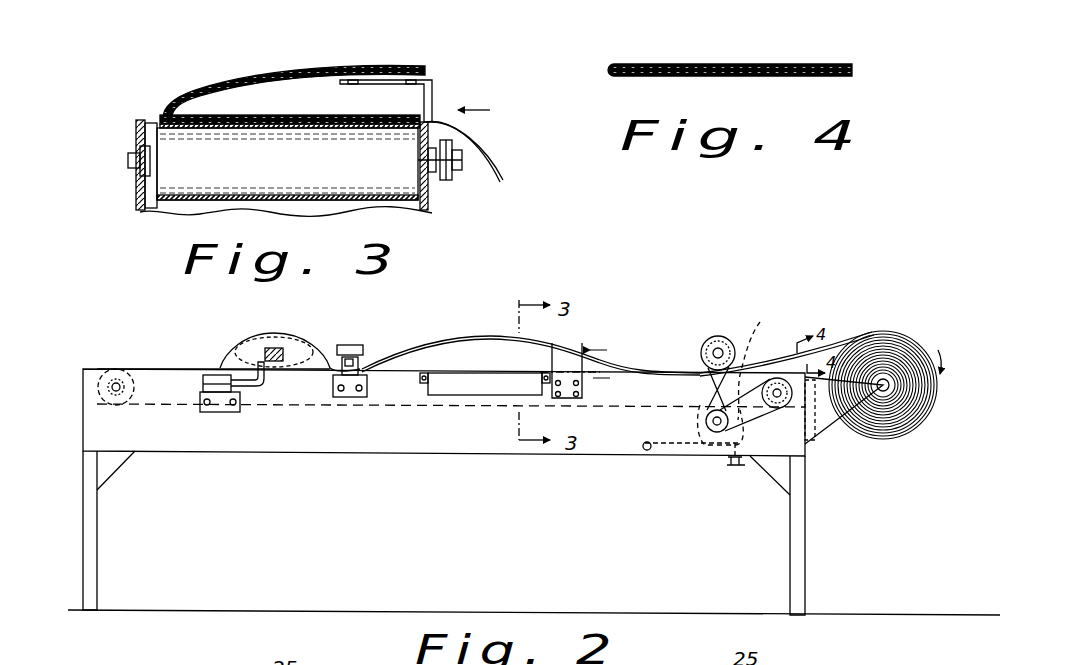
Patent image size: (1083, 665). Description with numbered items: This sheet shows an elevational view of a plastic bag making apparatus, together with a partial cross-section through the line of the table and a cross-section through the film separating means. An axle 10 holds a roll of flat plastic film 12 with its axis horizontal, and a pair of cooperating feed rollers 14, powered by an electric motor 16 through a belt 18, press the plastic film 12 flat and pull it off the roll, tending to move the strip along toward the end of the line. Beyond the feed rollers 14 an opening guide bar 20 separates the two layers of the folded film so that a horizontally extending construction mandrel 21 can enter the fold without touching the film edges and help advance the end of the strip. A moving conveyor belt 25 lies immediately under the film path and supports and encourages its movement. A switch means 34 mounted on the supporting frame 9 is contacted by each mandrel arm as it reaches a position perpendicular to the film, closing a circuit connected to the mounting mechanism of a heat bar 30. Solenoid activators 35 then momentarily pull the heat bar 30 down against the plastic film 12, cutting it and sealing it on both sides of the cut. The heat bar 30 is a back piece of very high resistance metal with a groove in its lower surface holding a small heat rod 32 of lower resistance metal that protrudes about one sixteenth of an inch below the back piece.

In FIG. 3, the supporting frame 9 is at (430, 207).
In FIG. 2, the supporting frame 9 is at (205, 443).
In FIG. 2, the axle 10 is at (876, 387).
In FIG. 3, the plastic film 12 is at (192, 100).
In FIG. 4, the plastic film 12 is at (775, 64).
In FIG. 2, the plastic film 12 is at (468, 342).
In FIG. 2, the feed rollers 14 is at (711, 333).
In FIG. 2, the electric motor 16 is at (704, 423).
In FIG. 2, the belt 18 is at (706, 386).
In FIG. 3, the opening guide bar 20 is at (430, 70).
In FIG. 2, the opening guide bar 20 is at (568, 332).
In FIG. 2, the construction mandrel 21 is at (232, 360).
In FIG. 3, the conveyor belt 25 is at (163, 118).
In FIG. 2, the conveyor belt 25 is at (170, 405).
In FIG. 2, the heat bar 30 is at (347, 345).
In FIG. 2, the heat rod 32 is at (355, 345).
In FIG. 2, the switch means 34 is at (266, 380).
In FIG. 2, the solenoid activators 35 is at (362, 369).